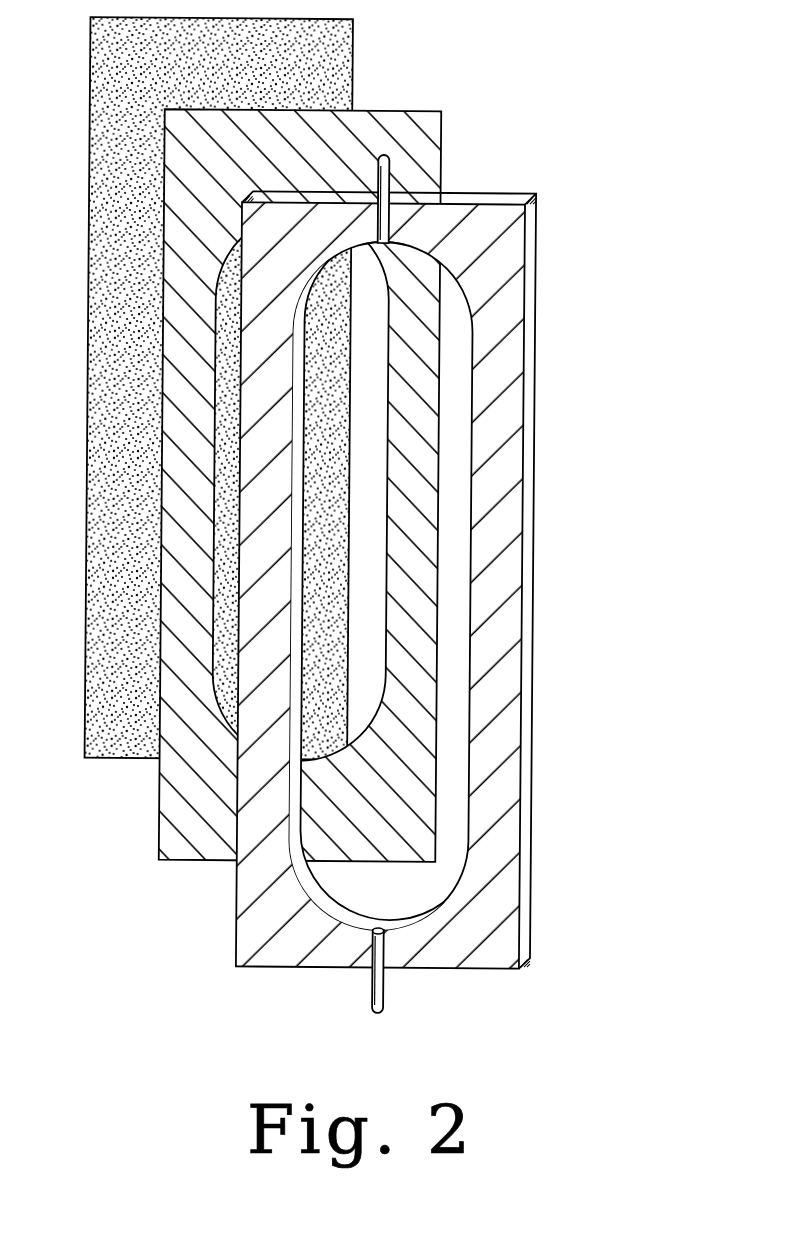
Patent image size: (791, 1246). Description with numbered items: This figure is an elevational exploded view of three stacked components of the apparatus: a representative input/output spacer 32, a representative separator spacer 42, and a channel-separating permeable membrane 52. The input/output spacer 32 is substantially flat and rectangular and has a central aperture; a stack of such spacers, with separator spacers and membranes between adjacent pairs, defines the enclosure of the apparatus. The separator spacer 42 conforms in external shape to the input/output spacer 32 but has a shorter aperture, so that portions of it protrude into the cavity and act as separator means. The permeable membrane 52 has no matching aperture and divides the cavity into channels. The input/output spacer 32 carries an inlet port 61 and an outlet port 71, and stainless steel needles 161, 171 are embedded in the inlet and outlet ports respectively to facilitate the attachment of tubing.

The input/output spacer 32 is at (518, 350).
The separator spacer 42 is at (442, 121).
The permeable membrane 52 is at (347, 51).
The inlet port 61 is at (391, 240).
The outlet port 71 is at (373, 957).
The stainless steel needle 161 is at (391, 168).
The stainless steel needle 171 is at (386, 1003).